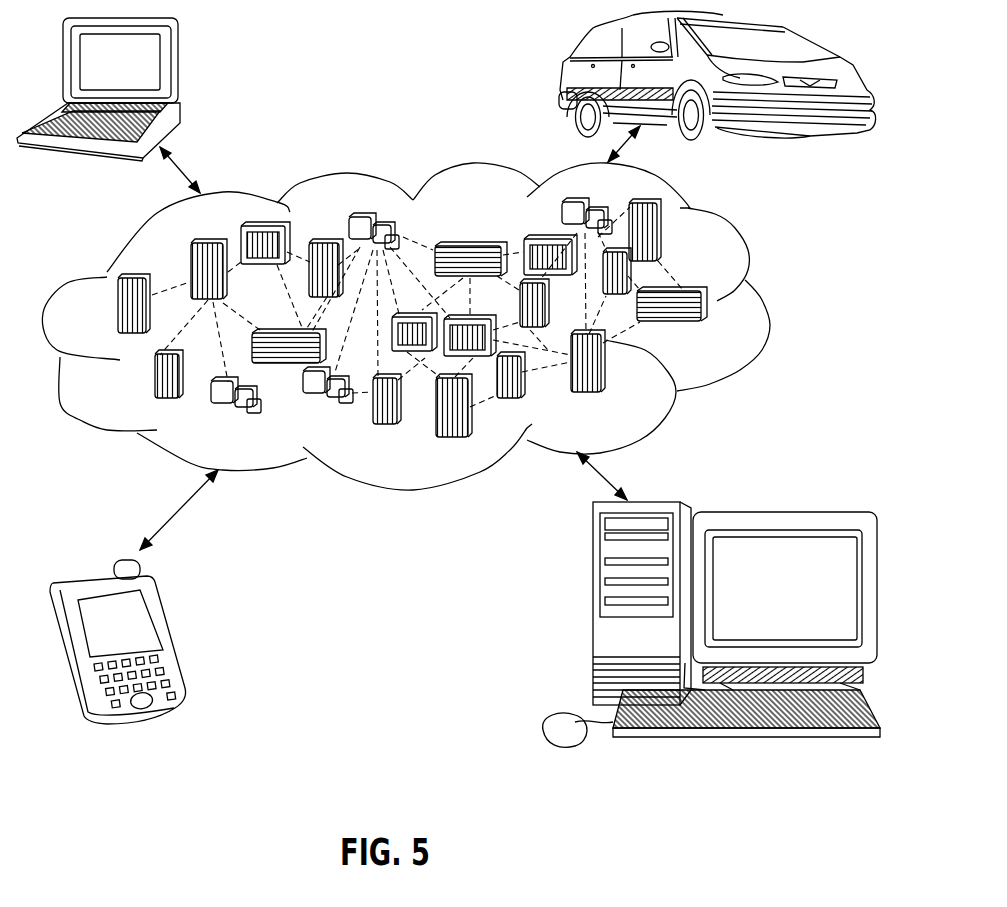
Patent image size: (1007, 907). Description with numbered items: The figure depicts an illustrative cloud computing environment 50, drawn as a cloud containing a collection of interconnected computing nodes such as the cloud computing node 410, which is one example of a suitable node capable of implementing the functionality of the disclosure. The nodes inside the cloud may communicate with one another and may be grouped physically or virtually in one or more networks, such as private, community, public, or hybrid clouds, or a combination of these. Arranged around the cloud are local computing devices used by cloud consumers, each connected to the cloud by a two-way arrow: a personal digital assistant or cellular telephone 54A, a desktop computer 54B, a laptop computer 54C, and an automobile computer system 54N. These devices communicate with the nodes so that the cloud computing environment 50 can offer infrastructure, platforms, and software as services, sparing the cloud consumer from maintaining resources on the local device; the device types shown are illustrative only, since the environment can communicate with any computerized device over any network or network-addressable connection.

The cloud computing environment 50 is at (752, 268).
The cloud computing node 410 is at (740, 332).
The personal digital assistant (PDA) or cellular telephone 54A is at (173, 637).
The desktop computer 54B is at (590, 613).
The laptop computer 54C is at (180, 68).
The automobile computer system 54N is at (563, 68).